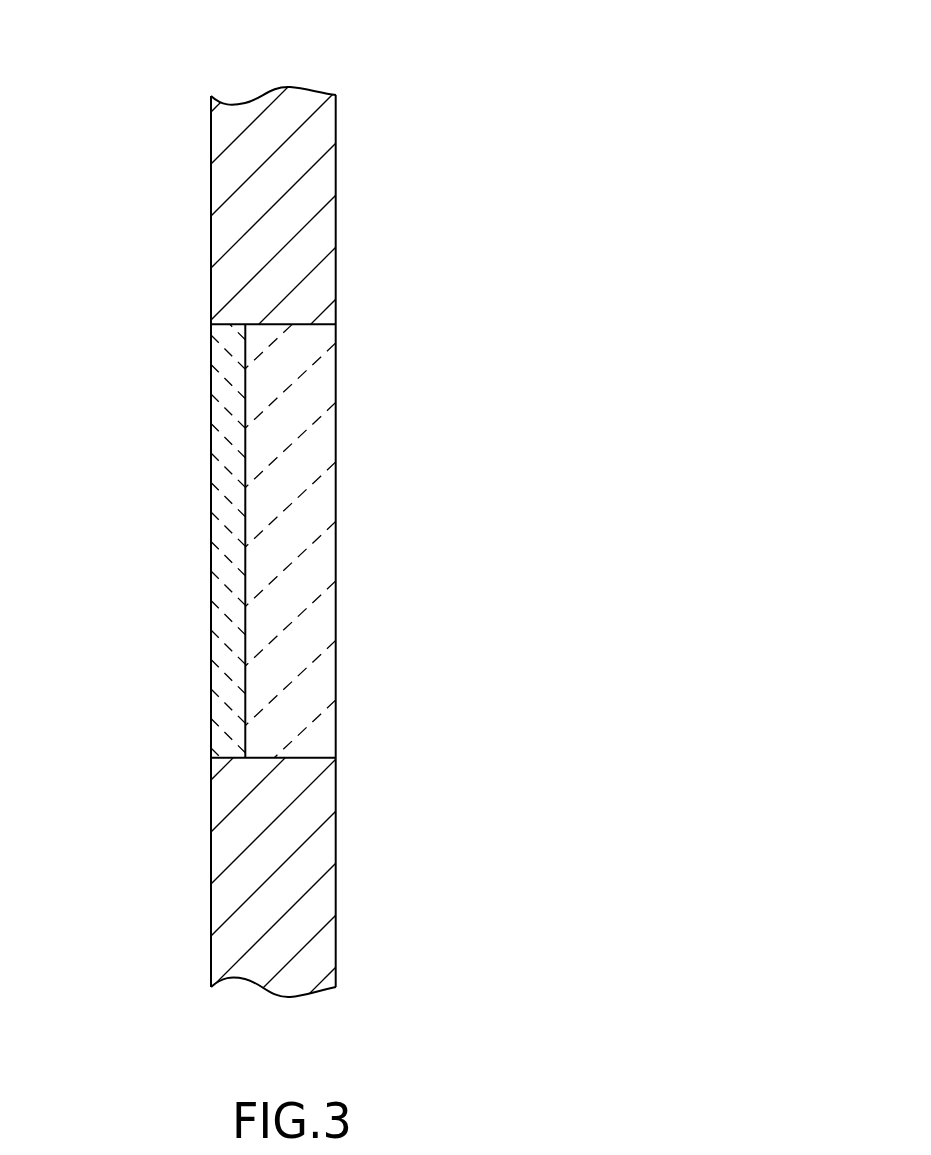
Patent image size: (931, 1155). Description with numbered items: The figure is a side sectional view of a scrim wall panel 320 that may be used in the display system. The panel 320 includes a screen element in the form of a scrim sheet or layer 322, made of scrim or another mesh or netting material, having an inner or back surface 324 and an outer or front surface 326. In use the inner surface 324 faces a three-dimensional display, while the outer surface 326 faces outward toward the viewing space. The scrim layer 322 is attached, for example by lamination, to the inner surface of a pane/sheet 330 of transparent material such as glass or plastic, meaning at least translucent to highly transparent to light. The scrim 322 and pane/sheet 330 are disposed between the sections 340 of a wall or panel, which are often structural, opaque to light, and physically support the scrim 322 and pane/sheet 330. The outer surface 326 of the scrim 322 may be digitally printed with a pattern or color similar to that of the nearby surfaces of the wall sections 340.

The scrim wall panel 320 is at (465, 550).
The scrim sheet or layer 322 is at (286, 549).
The inner or back surface 324 is at (210, 383).
The outer or front surface 326 is at (245, 381).
The pane/sheet 330 is at (350, 587).
The sections of a wall or panel 340 is at (336, 207).